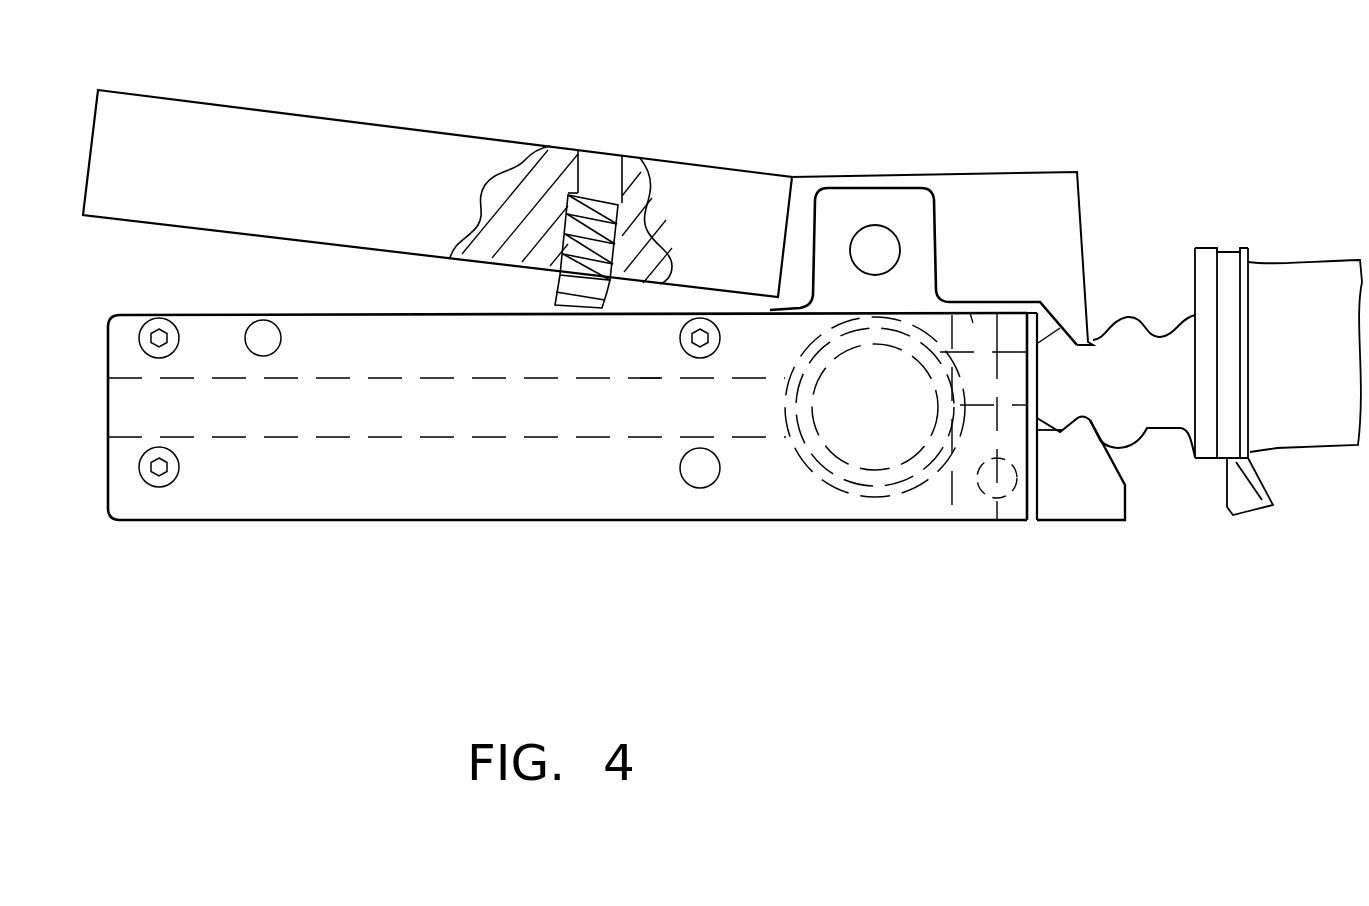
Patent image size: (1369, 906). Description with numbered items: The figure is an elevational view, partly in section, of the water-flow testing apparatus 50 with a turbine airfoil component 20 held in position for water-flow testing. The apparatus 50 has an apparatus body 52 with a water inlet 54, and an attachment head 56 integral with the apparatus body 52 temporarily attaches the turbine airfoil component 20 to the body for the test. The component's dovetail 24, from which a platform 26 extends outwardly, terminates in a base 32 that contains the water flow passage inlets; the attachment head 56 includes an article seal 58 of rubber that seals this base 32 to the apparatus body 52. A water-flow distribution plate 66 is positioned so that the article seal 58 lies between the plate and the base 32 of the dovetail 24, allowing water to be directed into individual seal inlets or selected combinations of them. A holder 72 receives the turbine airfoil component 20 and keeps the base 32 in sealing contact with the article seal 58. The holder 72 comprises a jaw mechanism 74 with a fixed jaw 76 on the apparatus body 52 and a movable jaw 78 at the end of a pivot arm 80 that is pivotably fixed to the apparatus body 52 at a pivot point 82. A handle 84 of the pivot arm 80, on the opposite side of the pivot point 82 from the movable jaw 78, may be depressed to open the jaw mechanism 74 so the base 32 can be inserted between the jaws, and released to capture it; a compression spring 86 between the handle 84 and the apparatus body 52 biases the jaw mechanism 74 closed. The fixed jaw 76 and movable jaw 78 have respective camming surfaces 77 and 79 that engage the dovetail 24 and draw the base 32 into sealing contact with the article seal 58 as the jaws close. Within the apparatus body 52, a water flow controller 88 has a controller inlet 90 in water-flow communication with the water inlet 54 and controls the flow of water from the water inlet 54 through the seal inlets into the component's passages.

The turbine airfoil component 20 is at (1326, 360).
The dovetail 24 is at (1146, 380).
The platform 26 is at (1225, 250).
The base 32 is at (1038, 425).
The water-flow testing apparatus 50 is at (655, 80).
The apparatus body 52 is at (434, 495).
The water inlet 54 is at (115, 390).
The attachment head 56 is at (1047, 200).
The article seal 58 is at (1008, 330).
The water-flow distribution plate 66 is at (973, 323).
The holder 72 is at (1150, 528).
The jaw mechanism 74 is at (1108, 230).
The fixed jaw 76 is at (1085, 437).
The camming surface 77 is at (1040, 410).
The movable jaw 78 is at (1108, 318).
The camming surface 79 is at (1077, 330).
The pivot arm 80 is at (923, 220).
The pivot point 82 is at (875, 248).
The handle 84 is at (152, 108).
The compression spring 86 is at (567, 303).
The water flow controller 88 is at (879, 490).
The controller inlet 90 is at (672, 378).